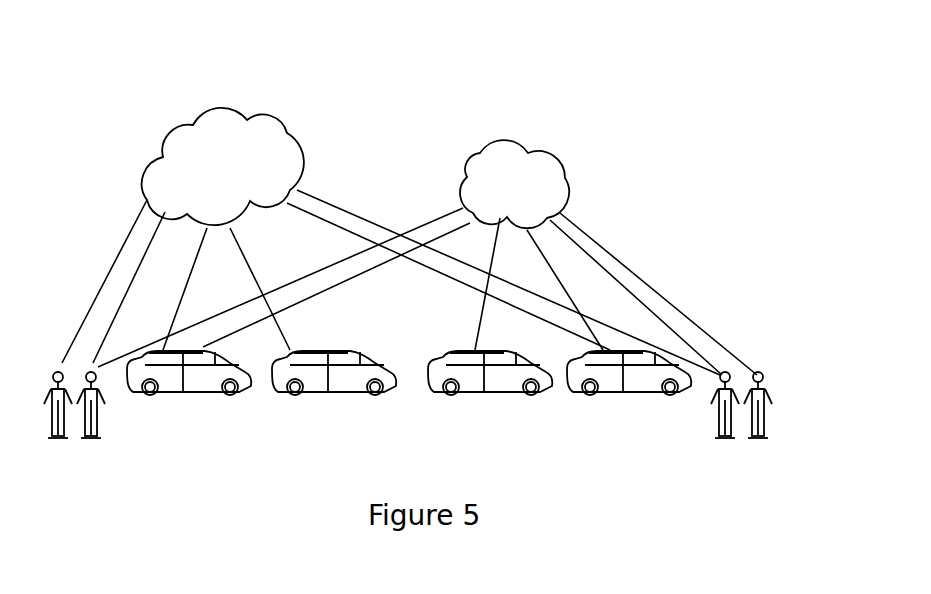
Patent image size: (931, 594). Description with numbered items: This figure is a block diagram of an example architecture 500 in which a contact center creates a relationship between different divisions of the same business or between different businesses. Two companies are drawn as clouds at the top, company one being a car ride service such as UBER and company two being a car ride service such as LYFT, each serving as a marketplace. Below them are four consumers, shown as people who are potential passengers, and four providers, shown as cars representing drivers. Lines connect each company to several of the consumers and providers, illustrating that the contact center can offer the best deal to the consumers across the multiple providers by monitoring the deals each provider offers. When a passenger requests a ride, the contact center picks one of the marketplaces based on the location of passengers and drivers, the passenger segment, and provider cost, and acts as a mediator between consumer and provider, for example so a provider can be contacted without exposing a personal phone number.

The example architecture 500 is at (610, 62).